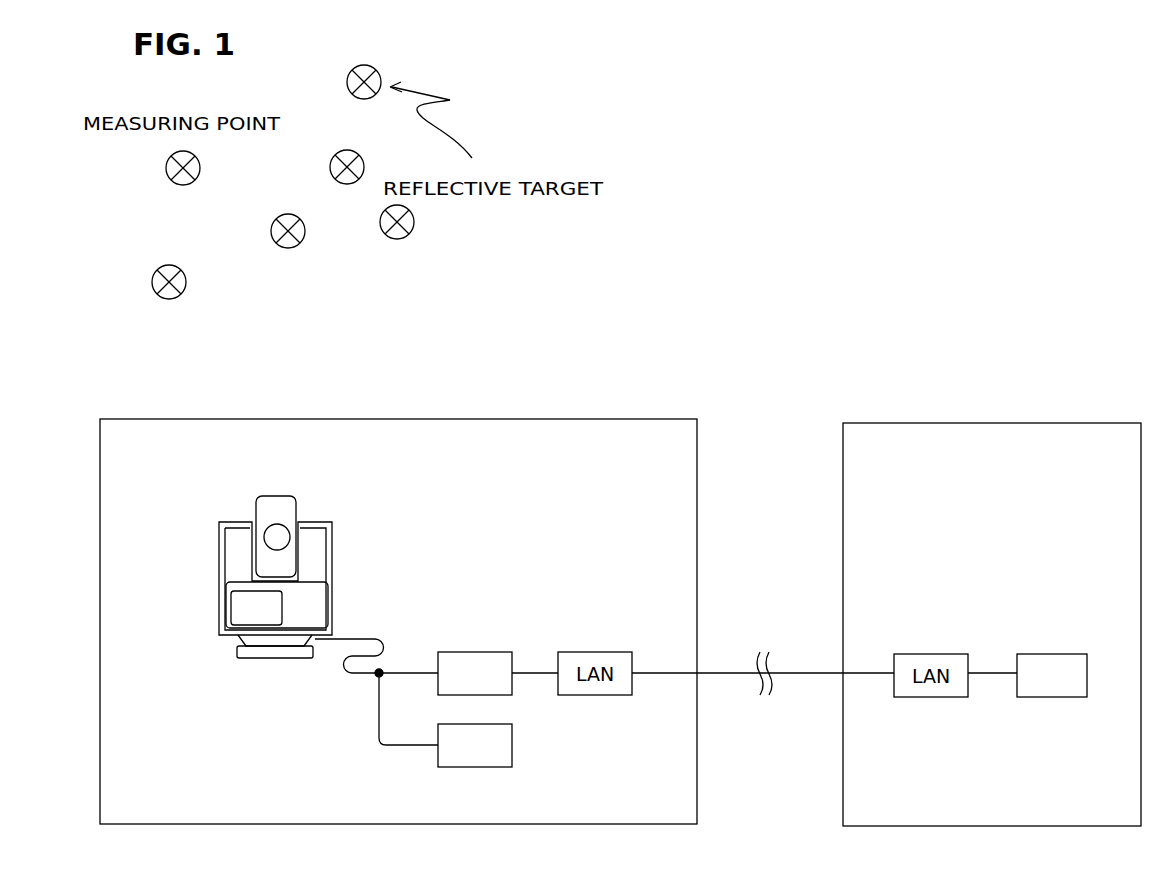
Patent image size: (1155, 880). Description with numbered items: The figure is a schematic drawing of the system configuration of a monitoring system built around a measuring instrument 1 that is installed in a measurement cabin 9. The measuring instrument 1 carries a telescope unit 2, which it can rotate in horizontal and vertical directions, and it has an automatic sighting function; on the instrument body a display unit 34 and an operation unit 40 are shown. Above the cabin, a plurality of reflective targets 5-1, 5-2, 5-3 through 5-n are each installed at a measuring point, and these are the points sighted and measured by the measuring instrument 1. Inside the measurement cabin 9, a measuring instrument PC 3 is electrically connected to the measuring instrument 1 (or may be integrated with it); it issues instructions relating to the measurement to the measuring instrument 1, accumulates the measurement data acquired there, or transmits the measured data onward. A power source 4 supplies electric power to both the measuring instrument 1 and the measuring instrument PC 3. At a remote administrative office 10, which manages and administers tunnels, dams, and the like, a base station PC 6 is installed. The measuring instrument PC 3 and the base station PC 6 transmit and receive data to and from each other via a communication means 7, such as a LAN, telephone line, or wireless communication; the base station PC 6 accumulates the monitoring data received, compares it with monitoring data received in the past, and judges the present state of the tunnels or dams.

The measuring instrument 1 is at (218, 572).
The telescope unit 2 is at (292, 497).
The measuring instrument PC 3 is at (482, 652).
The power source 4 is at (512, 752).
The reflective target 5-1 is at (166, 300).
The reflective target 5-2 is at (180, 186).
The reflective target 5-3 is at (290, 249).
The reflective target 5-n is at (381, 82).
The base station PC 6 is at (1045, 655).
The communication means 7 is at (790, 652).
The measurement cabin 9 is at (513, 418).
The administrative office 10 is at (992, 422).
The display unit 34 is at (248, 603).
The operation unit 40 is at (333, 608).